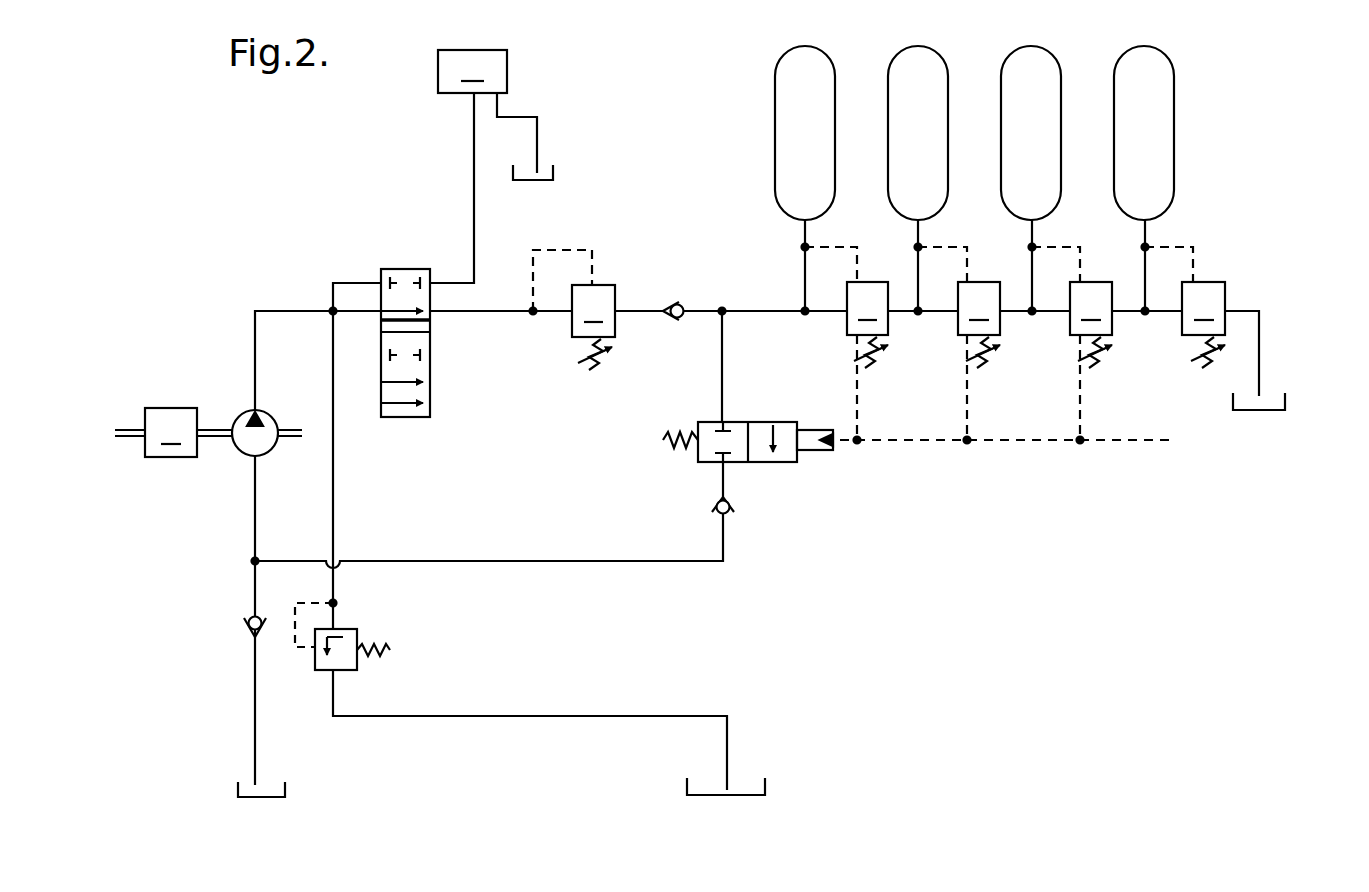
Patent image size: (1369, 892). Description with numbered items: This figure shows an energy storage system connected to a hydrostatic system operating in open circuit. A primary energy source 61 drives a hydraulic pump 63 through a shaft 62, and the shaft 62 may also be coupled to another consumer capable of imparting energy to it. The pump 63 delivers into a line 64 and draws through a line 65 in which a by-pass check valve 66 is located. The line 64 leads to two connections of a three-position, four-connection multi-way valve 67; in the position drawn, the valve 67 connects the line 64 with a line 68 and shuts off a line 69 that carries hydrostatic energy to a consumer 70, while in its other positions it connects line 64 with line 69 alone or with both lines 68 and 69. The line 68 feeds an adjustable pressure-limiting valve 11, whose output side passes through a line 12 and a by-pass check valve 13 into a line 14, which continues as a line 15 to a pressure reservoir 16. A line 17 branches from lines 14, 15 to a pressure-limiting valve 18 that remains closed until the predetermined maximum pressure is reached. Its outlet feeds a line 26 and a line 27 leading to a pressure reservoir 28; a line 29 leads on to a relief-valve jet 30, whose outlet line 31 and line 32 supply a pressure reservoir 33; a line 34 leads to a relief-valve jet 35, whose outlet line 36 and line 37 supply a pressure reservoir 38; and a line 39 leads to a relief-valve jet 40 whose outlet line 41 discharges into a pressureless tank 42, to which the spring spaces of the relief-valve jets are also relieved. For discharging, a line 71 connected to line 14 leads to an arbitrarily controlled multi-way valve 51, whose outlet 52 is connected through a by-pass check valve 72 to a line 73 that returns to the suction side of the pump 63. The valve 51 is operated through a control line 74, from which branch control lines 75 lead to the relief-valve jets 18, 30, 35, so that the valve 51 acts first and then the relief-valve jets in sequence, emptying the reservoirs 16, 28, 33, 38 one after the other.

The adjustable pressure-limiting valve 11 is at (574, 310).
The line 12 is at (635, 310).
The by-pass check valve 13 is at (680, 306).
The line 14 is at (707, 310).
The line 15 is at (805, 266).
The pressure reservoir 16 is at (834, 135).
The line 17 is at (813, 313).
The pressure-limiting valve 18 is at (846, 307).
The line 26 is at (903, 313).
The line 27 is at (918, 275).
The pressure reservoir 28 is at (948, 135).
The line 29 is at (935, 306).
The relief-valve jet 30 is at (979, 325).
The line 31 is at (1016, 313).
The line 32 is at (1032, 275).
The pressure reservoir 33 is at (1061, 135).
The line 34 is at (1048, 306).
The relief-valve jet 35 is at (1091, 325).
The line 36 is at (1130, 313).
The line 37 is at (1145, 275).
The pressure reservoir 38 is at (1175, 135).
The line 39 is at (1162, 306).
The relief-valve jet 40 is at (1203, 325).
The line 41 is at (1262, 345).
The pressureless tank 42 is at (556, 180).
The multi-way valve 51 is at (798, 400).
The outlet 52 is at (726, 482).
The primary energy source 61 is at (171, 432).
The shaft 62 is at (207, 430).
The hydraulic pump 63 is at (271, 450).
The line 64 is at (255, 342).
The line 65 is at (255, 514).
The by-pass check valve 66 is at (250, 618).
The 3-position/4-connection valve 67 is at (430, 392).
The line 68 is at (500, 313).
The line 69 is at (474, 185).
The consumer 70 is at (487, 111).
The line 71 is at (722, 385).
The by-pass check valve 72 is at (733, 512).
The line 73 is at (545, 560).
The control line 74 is at (992, 442).
The branch control lines 75 is at (860, 414).